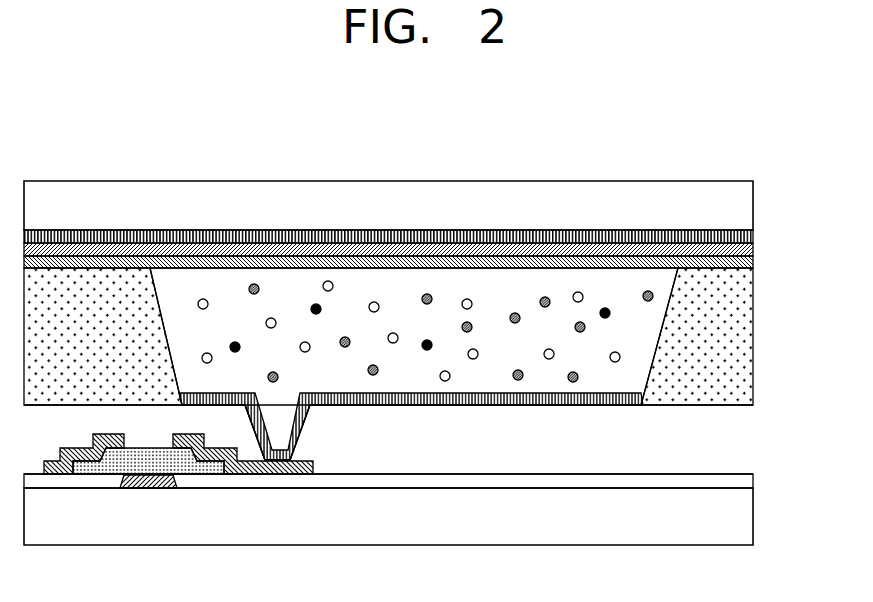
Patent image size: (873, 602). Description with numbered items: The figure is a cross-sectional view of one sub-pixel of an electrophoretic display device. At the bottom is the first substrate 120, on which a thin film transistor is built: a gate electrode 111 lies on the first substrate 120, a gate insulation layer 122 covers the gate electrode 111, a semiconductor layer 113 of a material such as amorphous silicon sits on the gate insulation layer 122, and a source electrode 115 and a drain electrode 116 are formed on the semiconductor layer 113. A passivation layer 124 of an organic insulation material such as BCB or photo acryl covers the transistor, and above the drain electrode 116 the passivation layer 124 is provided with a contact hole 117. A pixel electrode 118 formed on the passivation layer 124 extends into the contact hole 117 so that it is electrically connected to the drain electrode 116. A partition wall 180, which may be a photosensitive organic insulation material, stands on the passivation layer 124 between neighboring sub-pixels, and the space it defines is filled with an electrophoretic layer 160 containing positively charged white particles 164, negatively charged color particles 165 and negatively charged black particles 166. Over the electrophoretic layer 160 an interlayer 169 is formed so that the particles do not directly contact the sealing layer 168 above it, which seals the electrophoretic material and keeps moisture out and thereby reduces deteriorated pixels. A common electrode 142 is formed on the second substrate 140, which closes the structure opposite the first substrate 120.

The gate electrode 111 is at (143, 488).
The semiconductor layer 113 is at (92, 474).
The source electrode 115 is at (55, 474).
The drain electrode 116 is at (258, 474).
The contact hole 117 is at (277, 417).
The pixel electrode 118 is at (599, 395).
The first substrate 120 is at (735, 527).
The gate insulation layer 122 is at (735, 480).
The passivation layer 124 is at (735, 441).
The second substrate 140 is at (735, 198).
The common electrode 142 is at (735, 236).
The electrophoretic layer 160 is at (515, 285).
The white particles 164 is at (374, 302).
The color particles 165 is at (252, 284).
The black particles 166 is at (315, 304).
The sealing layer 168 is at (735, 250).
The interlayer 169 is at (745, 263).
The partition wall 180 is at (735, 318).